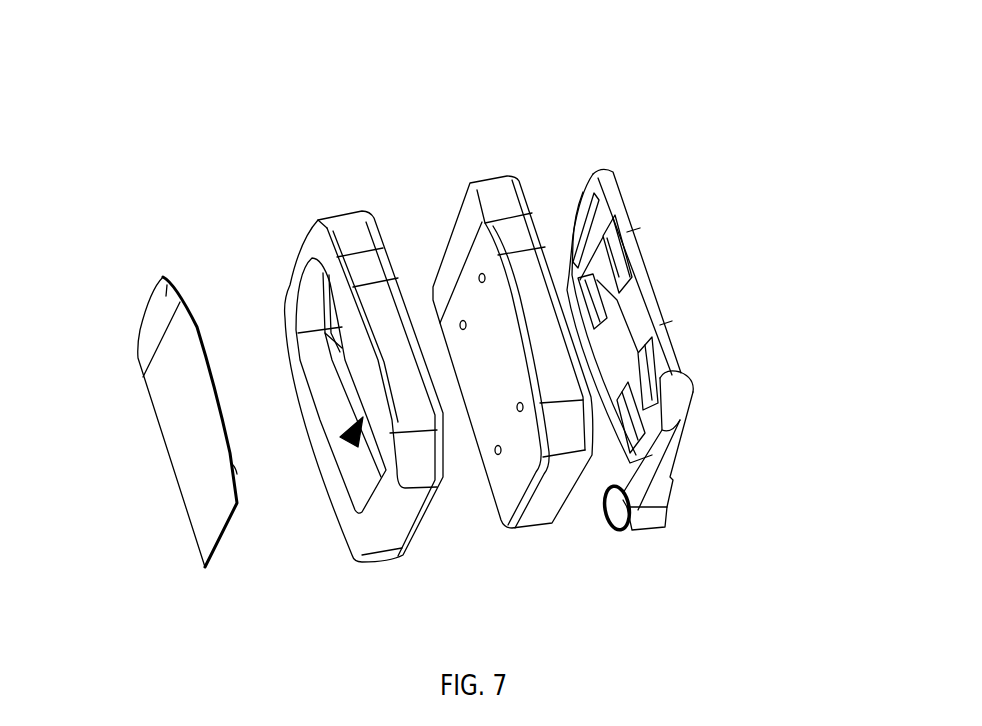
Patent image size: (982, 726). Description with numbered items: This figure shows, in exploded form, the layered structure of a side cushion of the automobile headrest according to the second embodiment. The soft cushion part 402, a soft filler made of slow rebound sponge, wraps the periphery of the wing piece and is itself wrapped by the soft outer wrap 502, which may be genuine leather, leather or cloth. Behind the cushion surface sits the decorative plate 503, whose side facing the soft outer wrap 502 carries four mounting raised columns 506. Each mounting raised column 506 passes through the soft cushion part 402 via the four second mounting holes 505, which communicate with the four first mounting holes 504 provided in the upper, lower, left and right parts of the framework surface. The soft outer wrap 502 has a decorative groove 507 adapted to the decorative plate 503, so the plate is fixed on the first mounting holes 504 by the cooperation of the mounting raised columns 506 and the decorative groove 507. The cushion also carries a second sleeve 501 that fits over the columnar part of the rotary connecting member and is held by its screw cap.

The soft cushion part 402 is at (495, 203).
The second sleeve 501 is at (637, 307).
The soft outer wrap 502 is at (343, 225).
The decorative plate 503 is at (172, 277).
The first mounting holes 504 is at (603, 243).
The second mounting holes 505 is at (498, 452).
The mounting raised column 506 is at (233, 467).
The decorative groove 507 is at (350, 443).